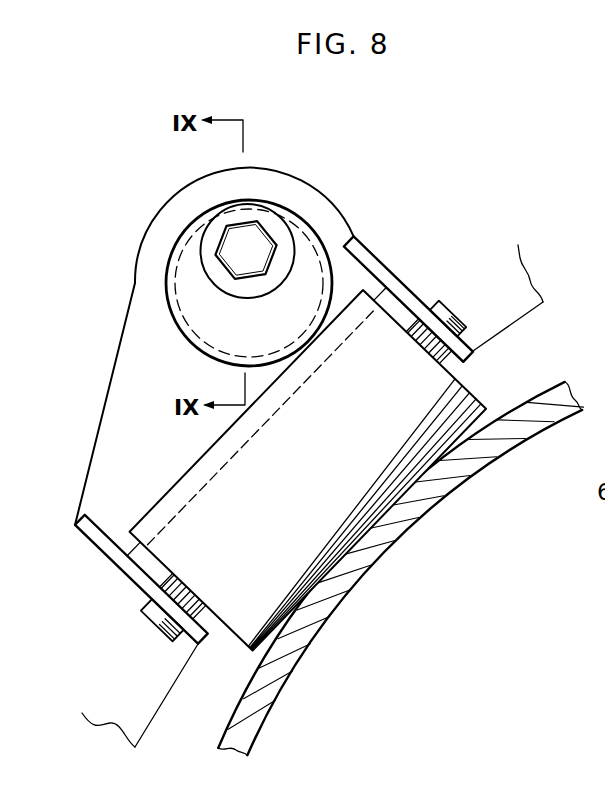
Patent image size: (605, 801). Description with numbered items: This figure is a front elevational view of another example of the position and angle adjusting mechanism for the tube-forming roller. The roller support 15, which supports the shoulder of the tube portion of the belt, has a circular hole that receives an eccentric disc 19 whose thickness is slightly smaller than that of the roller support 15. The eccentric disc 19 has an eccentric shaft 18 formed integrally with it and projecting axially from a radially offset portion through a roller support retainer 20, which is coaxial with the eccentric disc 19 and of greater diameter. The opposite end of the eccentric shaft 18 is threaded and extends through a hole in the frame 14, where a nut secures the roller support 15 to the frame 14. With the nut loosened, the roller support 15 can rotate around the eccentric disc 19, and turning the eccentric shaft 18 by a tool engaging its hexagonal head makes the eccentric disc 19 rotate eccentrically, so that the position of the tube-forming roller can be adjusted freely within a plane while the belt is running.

The frame 14 is at (157, 702).
The roller support 15 is at (131, 289).
The eccentric shaft 18 is at (262, 206).
The eccentric disc 19 is at (340, 211).
The roller support retainer 20 is at (323, 232).